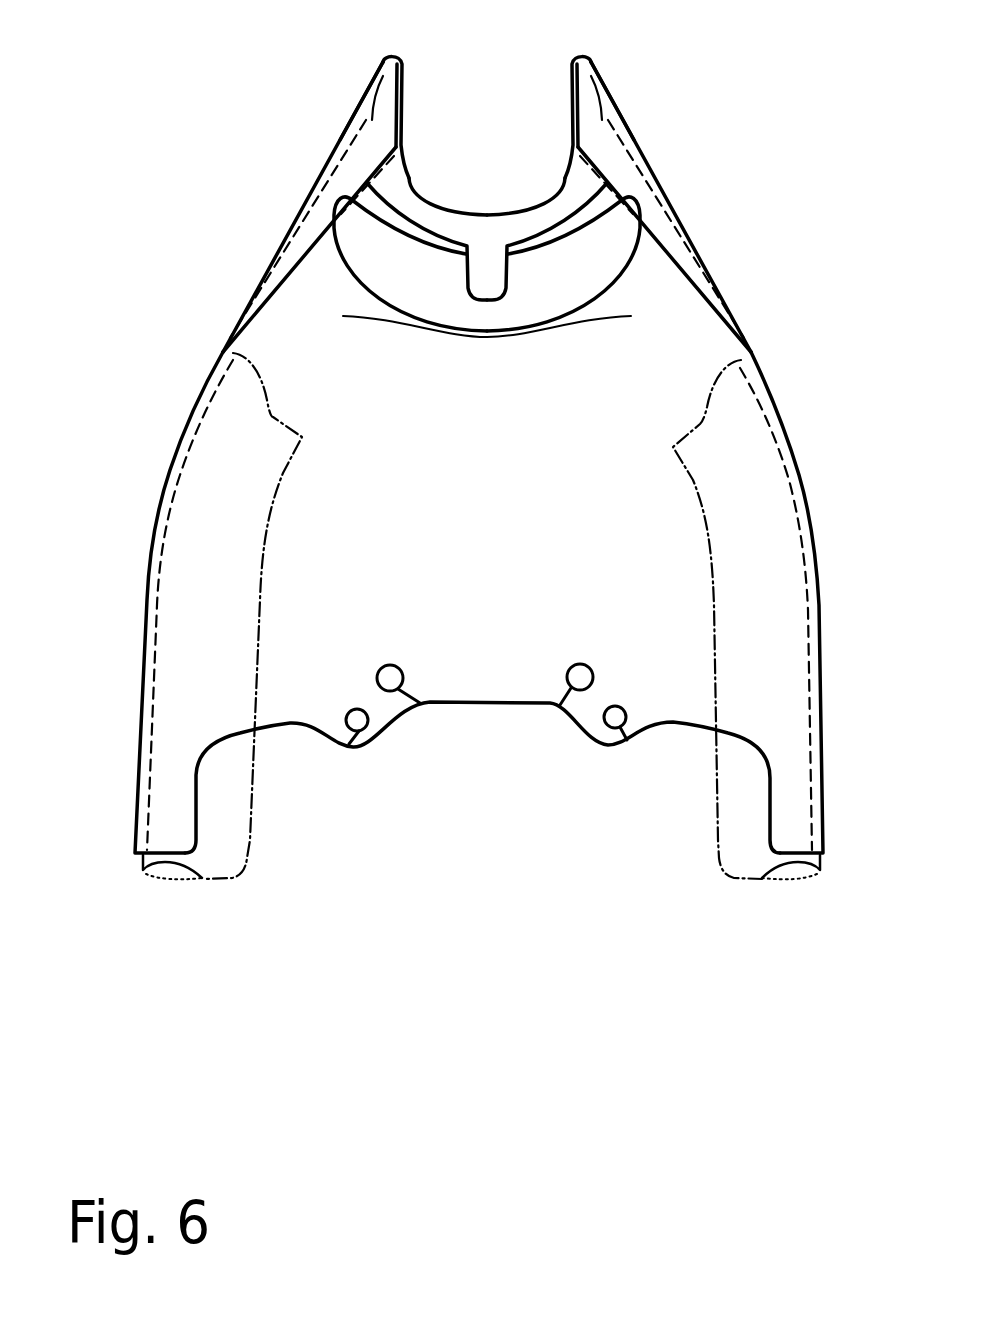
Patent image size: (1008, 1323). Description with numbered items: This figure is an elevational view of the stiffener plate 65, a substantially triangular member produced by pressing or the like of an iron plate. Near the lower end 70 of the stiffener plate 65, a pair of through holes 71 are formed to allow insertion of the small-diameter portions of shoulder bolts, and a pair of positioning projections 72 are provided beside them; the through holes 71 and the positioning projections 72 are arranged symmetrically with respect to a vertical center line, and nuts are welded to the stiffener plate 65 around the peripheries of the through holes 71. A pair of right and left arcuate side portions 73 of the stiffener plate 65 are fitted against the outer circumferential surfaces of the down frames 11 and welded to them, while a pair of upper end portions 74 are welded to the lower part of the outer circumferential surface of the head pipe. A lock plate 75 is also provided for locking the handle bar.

The down frame 11 is at (250, 860).
The stiffener plate 65 is at (700, 347).
The lower end 70 is at (288, 733).
The through hole 71 is at (420, 703).
The positioning projection 72 is at (347, 743).
The arcuate side portion 73 is at (140, 828).
The upper end portion 74 is at (405, 80).
The lock plate 75 is at (365, 233).